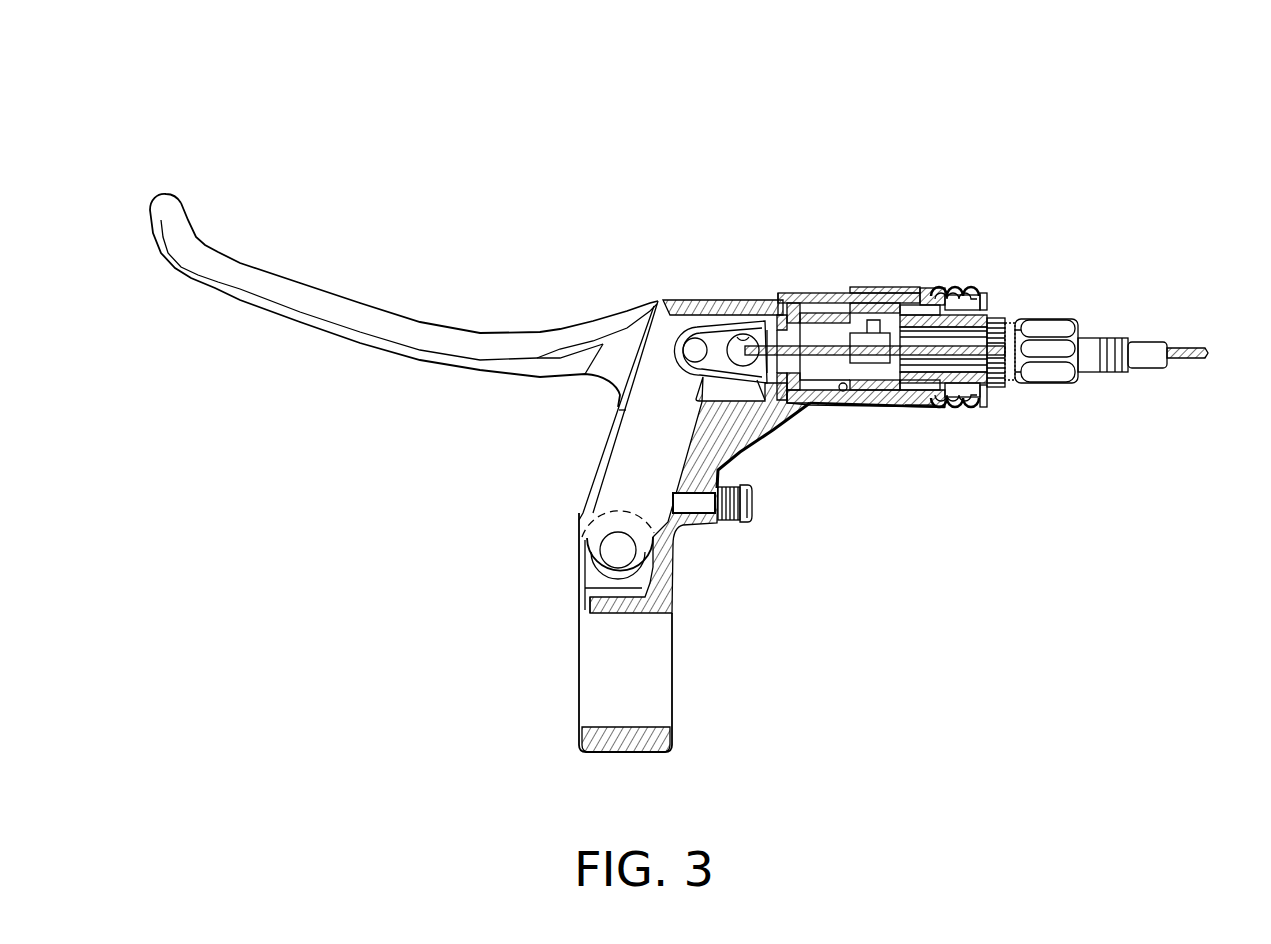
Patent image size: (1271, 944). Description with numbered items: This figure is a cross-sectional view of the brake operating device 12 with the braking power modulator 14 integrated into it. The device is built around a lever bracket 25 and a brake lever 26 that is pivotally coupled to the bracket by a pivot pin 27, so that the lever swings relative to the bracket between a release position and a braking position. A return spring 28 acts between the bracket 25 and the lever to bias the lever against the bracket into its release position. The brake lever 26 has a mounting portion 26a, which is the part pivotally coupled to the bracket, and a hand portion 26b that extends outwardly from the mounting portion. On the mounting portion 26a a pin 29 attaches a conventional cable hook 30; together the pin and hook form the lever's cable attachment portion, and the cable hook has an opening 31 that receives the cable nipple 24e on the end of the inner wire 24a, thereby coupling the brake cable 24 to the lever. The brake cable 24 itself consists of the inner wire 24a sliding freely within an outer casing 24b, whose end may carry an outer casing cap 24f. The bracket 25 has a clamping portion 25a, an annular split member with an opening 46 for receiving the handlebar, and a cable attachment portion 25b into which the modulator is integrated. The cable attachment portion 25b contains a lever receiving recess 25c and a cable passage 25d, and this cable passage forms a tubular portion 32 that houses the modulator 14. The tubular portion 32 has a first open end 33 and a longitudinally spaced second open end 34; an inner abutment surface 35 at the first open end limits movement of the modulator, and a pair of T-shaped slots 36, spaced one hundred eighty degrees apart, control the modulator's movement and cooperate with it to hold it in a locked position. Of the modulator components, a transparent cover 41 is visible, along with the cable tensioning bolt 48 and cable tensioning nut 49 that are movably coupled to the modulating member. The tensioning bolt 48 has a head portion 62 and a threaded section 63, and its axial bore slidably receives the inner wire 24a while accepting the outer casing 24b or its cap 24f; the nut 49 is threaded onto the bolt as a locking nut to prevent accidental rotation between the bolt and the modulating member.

The brake operating device 12 is at (860, 98).
The braking power modulator 14 is at (953, 276).
The brake cable 24 is at (1148, 336).
The inner wire 24a is at (1200, 360).
The outer casing 24b is at (1143, 368).
The cable nipple 24e is at (803, 407).
The outer casing cap 24f is at (1112, 335).
The lever bracket 25 is at (722, 296).
The clamping portion 25a is at (672, 637).
The cable attachment portion 25b is at (620, 423).
The lever receiving recess 25c is at (702, 405).
The cable passage 25d is at (907, 405).
The brake lever 26 is at (425, 312).
The mounting portion 26a is at (628, 472).
The hand portion 26b is at (457, 372).
The pivot pin 27 is at (612, 550).
The return spring 28 is at (585, 588).
The pin 29 is at (695, 326).
The cable hook 30 is at (742, 333).
The opening 31 is at (749, 339).
The tubular portion 32 is at (835, 288).
The first open end 33 is at (850, 405).
The second open end 34 is at (965, 288).
The inner abutment surface 35 is at (813, 313).
The T-shaped slots 36 is at (862, 325).
The transparent cover 41 is at (882, 407).
The opening 46 is at (640, 725).
The cable tensioning bolt 48 is at (1058, 320).
The cable tensioning nut 49 is at (1003, 308).
The head portion 62 is at (1055, 384).
The threaded section 63 is at (957, 415).